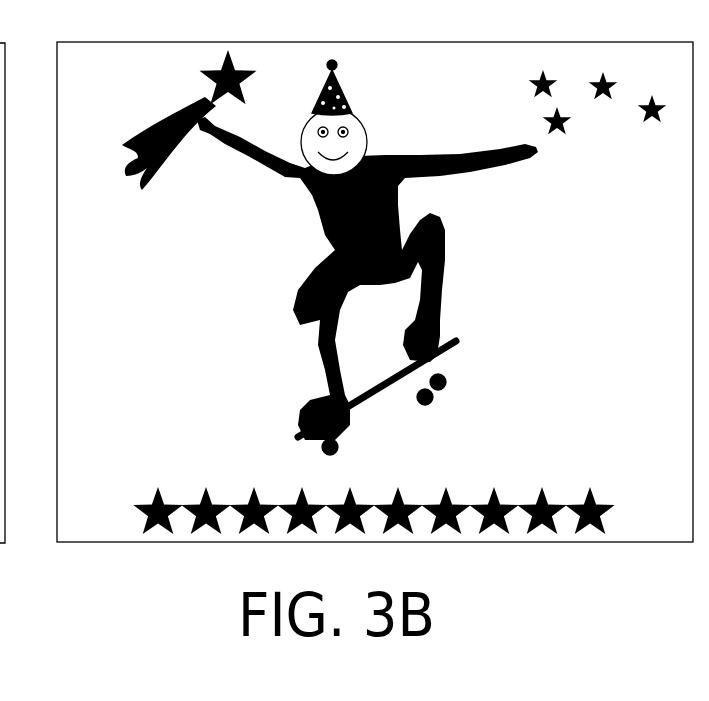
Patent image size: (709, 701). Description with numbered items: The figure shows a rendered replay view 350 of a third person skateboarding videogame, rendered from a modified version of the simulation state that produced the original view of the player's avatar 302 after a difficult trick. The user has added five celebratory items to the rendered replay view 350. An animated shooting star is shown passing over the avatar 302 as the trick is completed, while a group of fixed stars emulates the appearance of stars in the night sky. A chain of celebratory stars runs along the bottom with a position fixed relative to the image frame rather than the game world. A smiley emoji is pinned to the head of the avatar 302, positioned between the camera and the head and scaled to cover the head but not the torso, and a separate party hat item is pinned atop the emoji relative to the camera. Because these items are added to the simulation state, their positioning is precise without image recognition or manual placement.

The rendered replay view 350 is at (55, 39).
The avatar 302 is at (447, 221).